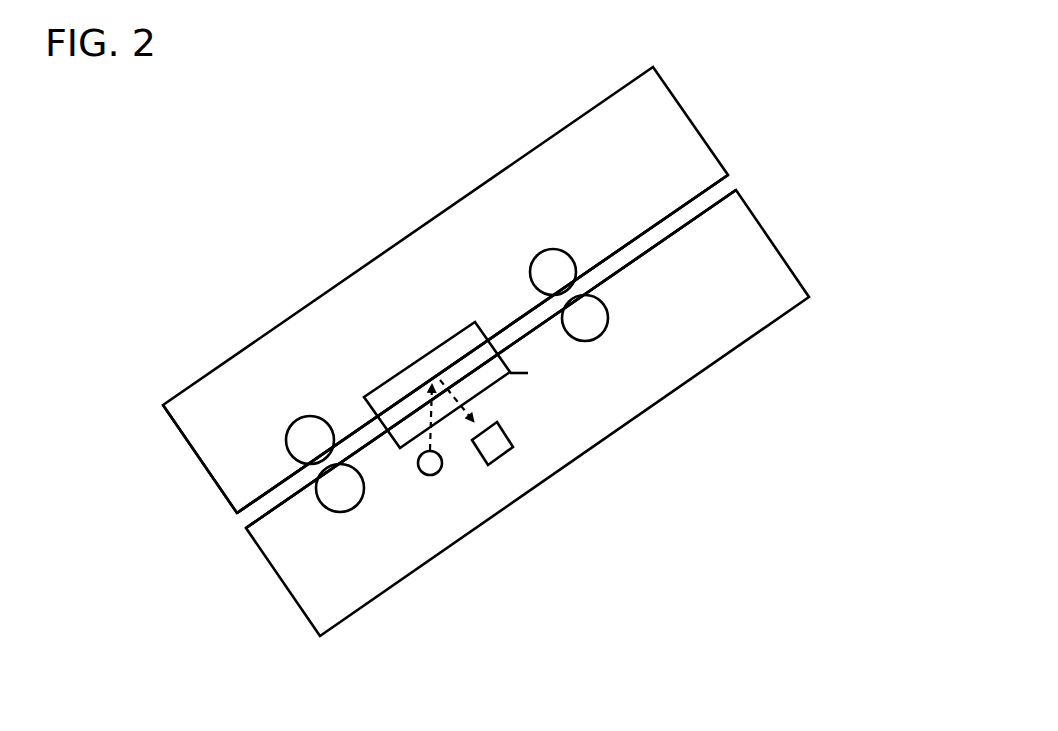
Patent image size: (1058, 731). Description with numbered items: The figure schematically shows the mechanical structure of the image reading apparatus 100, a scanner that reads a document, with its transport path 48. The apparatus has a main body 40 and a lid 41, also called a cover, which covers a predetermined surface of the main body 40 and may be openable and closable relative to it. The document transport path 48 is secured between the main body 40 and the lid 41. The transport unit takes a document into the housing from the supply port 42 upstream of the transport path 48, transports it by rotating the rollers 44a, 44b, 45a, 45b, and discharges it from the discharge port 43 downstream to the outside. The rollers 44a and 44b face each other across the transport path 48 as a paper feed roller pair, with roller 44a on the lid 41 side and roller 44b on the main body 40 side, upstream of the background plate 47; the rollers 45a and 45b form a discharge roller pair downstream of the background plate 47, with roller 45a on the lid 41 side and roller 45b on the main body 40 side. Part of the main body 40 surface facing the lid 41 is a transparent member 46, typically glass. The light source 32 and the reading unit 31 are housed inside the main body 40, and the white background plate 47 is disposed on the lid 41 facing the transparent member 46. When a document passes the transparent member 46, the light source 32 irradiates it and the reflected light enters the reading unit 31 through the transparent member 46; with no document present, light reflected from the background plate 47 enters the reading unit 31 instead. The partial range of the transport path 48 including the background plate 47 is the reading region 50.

The image reading apparatus 100 is at (410, 190).
The lid 41 is at (693, 120).
The main body 40 is at (791, 275).
The supply port 42 is at (747, 182).
The transport path 48 is at (661, 229).
The discharge port 43 is at (231, 520).
The roller 44a is at (548, 249).
The roller 44b is at (608, 323).
The roller 45a is at (310, 416).
The roller 45b is at (335, 512).
The background plate 47 is at (455, 335).
The transparent member 46 is at (536, 383).
The reading unit 31 is at (500, 430).
The light source 32 is at (442, 467).
The reading region 50 is at (389, 428).